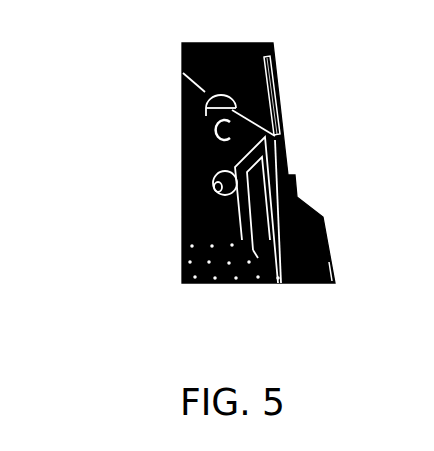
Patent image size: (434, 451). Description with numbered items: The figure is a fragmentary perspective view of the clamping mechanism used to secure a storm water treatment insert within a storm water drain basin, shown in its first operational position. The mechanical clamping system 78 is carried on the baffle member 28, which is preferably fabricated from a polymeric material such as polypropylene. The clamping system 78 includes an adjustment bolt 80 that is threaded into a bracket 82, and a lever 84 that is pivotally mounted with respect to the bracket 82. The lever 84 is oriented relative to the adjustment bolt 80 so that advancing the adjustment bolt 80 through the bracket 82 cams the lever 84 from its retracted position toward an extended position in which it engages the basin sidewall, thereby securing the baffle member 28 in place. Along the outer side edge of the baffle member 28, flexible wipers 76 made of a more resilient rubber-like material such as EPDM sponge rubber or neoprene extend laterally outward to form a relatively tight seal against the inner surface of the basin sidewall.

The mechanical clamping system 78 is at (324, 132).
The adjustment bolt 80 is at (207, 108).
The bracket 82 is at (207, 164).
The lever 84 is at (243, 230).
The baffle member 28 is at (193, 252).
The flexible wipers 76 is at (332, 268).